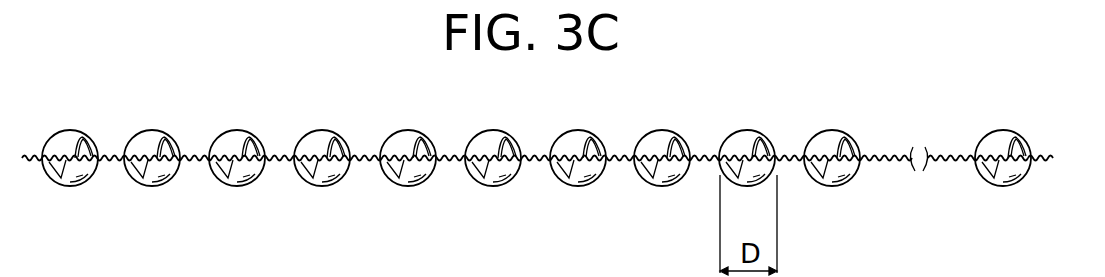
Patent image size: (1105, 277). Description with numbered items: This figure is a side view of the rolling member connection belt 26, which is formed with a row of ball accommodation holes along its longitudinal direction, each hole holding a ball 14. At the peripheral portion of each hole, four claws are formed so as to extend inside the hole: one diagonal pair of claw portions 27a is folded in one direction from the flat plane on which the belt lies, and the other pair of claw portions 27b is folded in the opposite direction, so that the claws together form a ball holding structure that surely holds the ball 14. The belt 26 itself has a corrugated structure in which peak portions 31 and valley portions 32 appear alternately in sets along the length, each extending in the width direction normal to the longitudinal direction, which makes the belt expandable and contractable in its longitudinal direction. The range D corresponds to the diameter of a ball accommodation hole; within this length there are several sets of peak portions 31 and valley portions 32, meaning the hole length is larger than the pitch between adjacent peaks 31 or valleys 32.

The ball 14 is at (497, 185).
The rolling member connection belt 26 is at (708, 156).
The claw portion 27a is at (680, 148).
The claw portion 27b is at (652, 173).
The peak portion 31 is at (313, 158).
The valley portion 32 is at (279, 165).